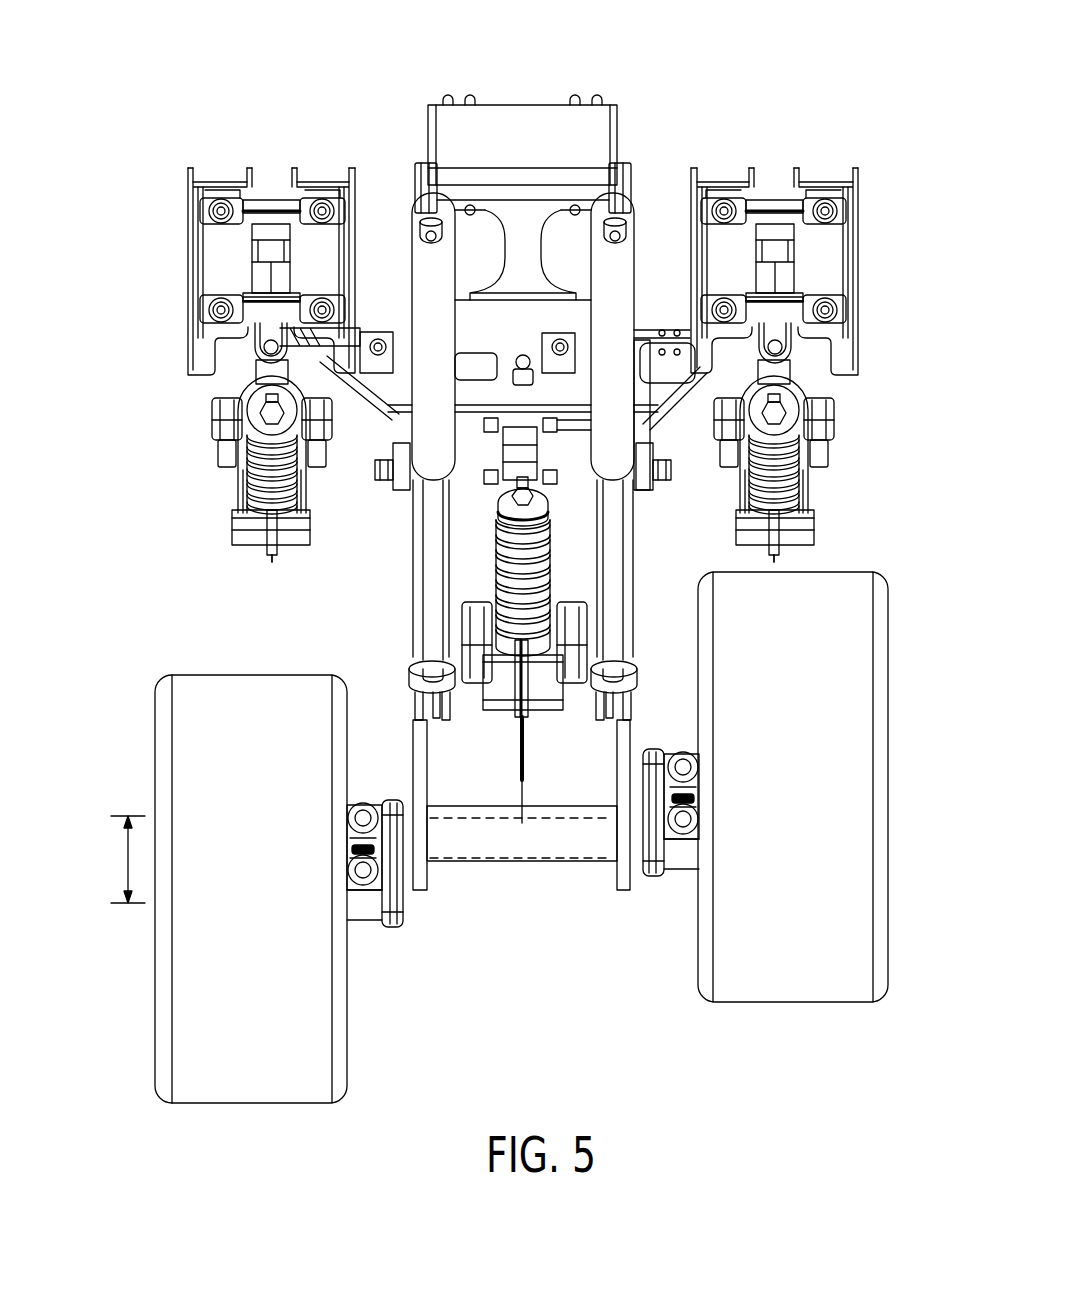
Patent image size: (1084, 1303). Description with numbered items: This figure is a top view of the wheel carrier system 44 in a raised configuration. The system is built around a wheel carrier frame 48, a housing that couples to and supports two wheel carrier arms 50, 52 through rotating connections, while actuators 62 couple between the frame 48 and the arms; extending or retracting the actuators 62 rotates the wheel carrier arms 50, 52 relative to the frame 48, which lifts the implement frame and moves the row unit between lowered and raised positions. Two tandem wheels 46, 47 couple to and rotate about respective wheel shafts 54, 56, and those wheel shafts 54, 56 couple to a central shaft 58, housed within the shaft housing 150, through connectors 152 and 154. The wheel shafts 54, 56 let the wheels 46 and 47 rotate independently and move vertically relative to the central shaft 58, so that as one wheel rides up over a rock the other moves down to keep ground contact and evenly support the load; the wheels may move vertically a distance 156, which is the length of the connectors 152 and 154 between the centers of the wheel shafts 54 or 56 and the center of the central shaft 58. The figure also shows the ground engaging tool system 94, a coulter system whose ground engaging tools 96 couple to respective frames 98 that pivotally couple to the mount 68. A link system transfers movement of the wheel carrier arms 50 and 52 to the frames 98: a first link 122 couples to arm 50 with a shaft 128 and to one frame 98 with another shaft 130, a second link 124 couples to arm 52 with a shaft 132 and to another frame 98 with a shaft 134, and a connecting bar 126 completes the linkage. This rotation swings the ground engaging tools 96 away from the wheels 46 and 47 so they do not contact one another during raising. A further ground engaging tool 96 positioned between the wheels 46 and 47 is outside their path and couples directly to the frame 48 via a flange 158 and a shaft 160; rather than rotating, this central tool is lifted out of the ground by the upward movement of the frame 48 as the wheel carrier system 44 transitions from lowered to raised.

The wheel carrier system 44 is at (850, 117).
The wheel 46 is at (785, 975).
The wheel 47 is at (236, 1085).
The wheel carrier frame 48 is at (513, 127).
The wheel carrier arm 50 is at (628, 592).
The wheel carrier arm 52 is at (416, 604).
The wheel shaft 54 is at (667, 757).
The wheel shaft 56 is at (347, 903).
The central shaft 58 is at (485, 860).
The actuator 62 is at (430, 262).
The mount 68 is at (190, 247).
The ground engaging tool system 94 is at (178, 540).
The ground engaging tool 96 is at (272, 560).
The frame 98 is at (190, 410).
The first link 122 is at (673, 403).
The second link 124 is at (375, 410).
The connecting bar 126 is at (643, 333).
The shaft 128 is at (388, 470).
The shaft 130 is at (790, 326).
The shaft 132 is at (657, 474).
The shaft 134 is at (257, 311).
The shaft housing 150 is at (558, 840).
The connector 152 is at (678, 857).
The connector 154 is at (370, 807).
The distance 156 is at (115, 857).
The flange 158 is at (492, 448).
The shaft 160 is at (592, 455).